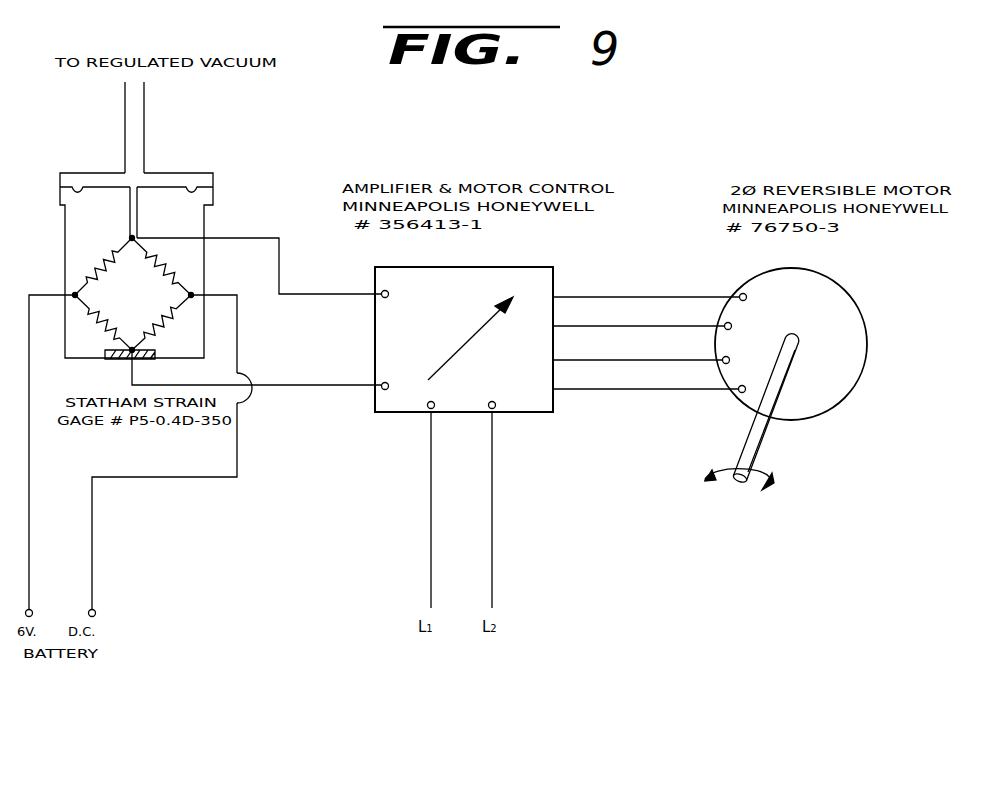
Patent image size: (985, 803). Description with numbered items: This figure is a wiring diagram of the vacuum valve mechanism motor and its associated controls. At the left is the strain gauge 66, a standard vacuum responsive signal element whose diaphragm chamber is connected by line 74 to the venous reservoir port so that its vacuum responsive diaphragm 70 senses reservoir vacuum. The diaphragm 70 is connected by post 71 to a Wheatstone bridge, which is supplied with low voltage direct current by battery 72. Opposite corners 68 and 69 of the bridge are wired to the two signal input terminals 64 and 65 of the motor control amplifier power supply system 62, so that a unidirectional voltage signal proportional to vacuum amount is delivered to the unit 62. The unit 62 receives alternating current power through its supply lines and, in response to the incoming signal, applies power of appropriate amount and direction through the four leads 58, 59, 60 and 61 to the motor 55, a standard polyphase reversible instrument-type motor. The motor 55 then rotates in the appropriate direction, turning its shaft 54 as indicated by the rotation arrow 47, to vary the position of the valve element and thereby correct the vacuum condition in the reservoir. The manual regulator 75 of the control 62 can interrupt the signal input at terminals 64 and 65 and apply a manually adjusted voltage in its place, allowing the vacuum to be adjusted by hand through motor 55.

The rotation arrow of shaft 47 is at (768, 471).
The motor output shaft 54 is at (752, 441).
The motor 55 is at (822, 382).
The motor lead 58 is at (624, 297).
The motor lead 59 is at (650, 326).
The motor lead 60 is at (612, 360).
The motor lead 61 is at (644, 389).
The motor control amplifier power supply system 62 is at (513, 385).
The signal input terminal 64 is at (382, 291).
The signal input terminal 65 is at (382, 389).
The strain gauge 66 is at (98, 243).
The corner of Wheatstone bridge 68 is at (191, 295).
The corner of Wheatstone bridge 69 is at (75, 295).
The vacuum responsive diaphragm 70 is at (162, 187).
The post 71 is at (140, 220).
The battery 72 is at (65, 608).
The line 74 is at (128, 128).
The manual regulator 75 is at (456, 358).